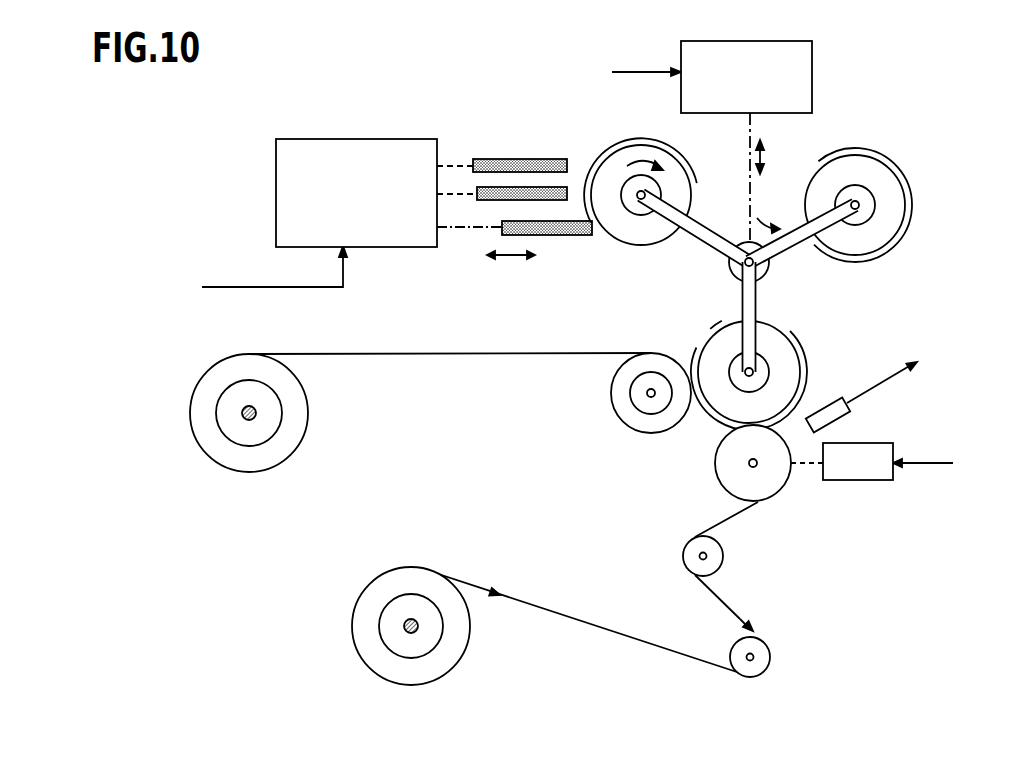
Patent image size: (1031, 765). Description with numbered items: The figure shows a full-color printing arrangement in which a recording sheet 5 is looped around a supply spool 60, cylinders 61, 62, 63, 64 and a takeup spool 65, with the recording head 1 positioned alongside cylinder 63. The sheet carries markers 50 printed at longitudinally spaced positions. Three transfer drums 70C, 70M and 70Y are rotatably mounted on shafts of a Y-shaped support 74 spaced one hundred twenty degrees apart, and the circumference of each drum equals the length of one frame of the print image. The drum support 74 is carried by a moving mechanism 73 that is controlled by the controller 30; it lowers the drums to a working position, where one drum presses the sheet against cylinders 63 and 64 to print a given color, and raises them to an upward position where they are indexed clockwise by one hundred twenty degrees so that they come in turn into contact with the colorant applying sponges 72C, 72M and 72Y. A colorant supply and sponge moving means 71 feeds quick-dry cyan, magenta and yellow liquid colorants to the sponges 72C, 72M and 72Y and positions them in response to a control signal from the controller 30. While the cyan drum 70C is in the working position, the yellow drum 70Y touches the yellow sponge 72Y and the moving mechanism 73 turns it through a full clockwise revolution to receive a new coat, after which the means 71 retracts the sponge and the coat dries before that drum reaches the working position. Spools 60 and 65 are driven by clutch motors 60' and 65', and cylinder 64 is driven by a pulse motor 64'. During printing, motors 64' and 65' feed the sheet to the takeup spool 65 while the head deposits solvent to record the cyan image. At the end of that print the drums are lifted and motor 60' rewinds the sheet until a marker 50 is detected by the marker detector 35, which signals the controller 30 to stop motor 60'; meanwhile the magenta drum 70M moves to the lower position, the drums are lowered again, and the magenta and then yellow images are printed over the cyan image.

The print head 1 is at (874, 480).
The recording sheet 5 is at (550, 608).
The controller 30 is at (525, 251).
The marker detector 35 is at (852, 416).
The marker 50 is at (756, 632).
The supply spool 60 is at (424, 635).
The clutch motor 60' is at (396, 673).
The cylinder 61 is at (768, 650).
The cylinder 62 is at (718, 556).
The cylinder 63 is at (718, 480).
The cylinder 64 is at (635, 402).
The pulse motor 64' is at (601, 401).
The takeup spool 65 is at (278, 413).
The clutch motor 65' is at (230, 462).
The yellow transfer drum 70Y is at (631, 246).
The magenta transfer drum 70M is at (898, 193).
The cyan transfer drum 70C is at (774, 326).
The colorant supply and sponge moving means 71 is at (405, 139).
The cyan colorant applying sponge 72C is at (500, 159).
The magenta colorant applying sponge 72M is at (490, 200).
The yellow colorant applying sponge 72Y is at (555, 236).
The moving mechanism 73 is at (812, 78).
The Y-shaped support 74 is at (718, 260).